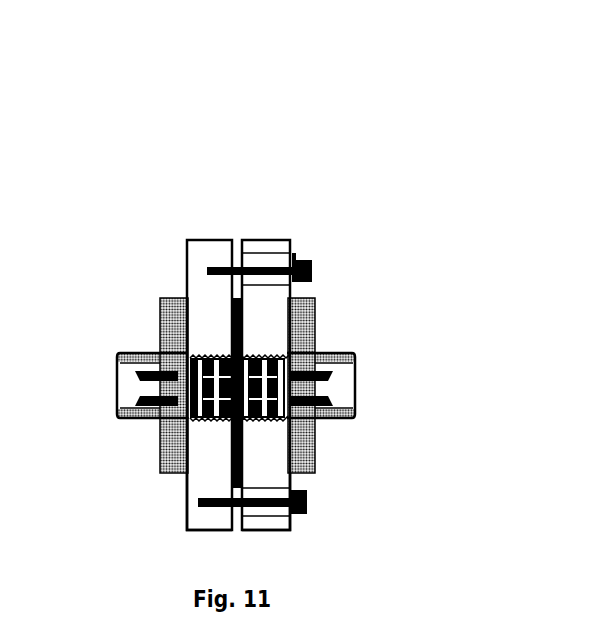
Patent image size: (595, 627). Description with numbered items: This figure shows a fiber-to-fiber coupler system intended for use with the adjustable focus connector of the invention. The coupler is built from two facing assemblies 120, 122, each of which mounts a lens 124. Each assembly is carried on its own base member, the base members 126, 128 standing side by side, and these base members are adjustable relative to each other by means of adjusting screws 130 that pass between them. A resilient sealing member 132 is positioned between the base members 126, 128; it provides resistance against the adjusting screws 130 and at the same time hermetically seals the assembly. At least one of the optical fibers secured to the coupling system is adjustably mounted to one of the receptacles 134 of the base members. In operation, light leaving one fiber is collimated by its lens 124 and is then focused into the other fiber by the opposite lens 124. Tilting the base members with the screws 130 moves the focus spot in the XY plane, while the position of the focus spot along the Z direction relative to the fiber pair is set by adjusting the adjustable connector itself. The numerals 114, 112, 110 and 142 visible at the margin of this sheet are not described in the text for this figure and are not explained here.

The assembly 120 is at (210, 200).
The assembly 122 is at (292, 203).
The lens 124 is at (160, 355).
The base member 126 is at (186, 528).
The base member 128 is at (278, 531).
The adjusting screw 130 is at (307, 262).
The resilient sealing member 132 is at (230, 310).
The receptacle 134 is at (157, 460).
The drive member 114 is at (19, 25).
The shaft 112 is at (18, 90).
The coupling 110 is at (4, 135).
The housing 142 is at (38, 612).